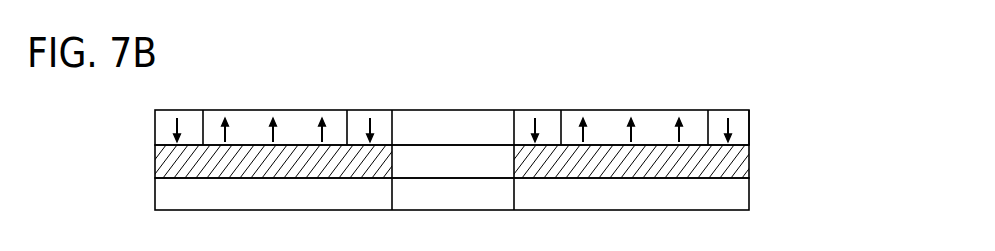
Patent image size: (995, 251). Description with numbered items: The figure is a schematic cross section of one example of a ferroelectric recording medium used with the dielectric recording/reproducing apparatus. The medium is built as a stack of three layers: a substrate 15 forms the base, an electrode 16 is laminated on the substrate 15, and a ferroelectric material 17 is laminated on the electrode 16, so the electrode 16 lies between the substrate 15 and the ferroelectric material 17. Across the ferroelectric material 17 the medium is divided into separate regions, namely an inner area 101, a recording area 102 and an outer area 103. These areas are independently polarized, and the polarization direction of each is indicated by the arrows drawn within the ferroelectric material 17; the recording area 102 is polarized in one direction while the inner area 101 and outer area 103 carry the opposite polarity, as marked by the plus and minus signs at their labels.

The substrate 15 is at (752, 187).
The electrode 16 is at (752, 154).
The ferroelectric material 17 is at (752, 122).
The inner area 101 is at (533, 108).
The recording area 102 is at (657, 108).
The outer area 103 is at (737, 108).